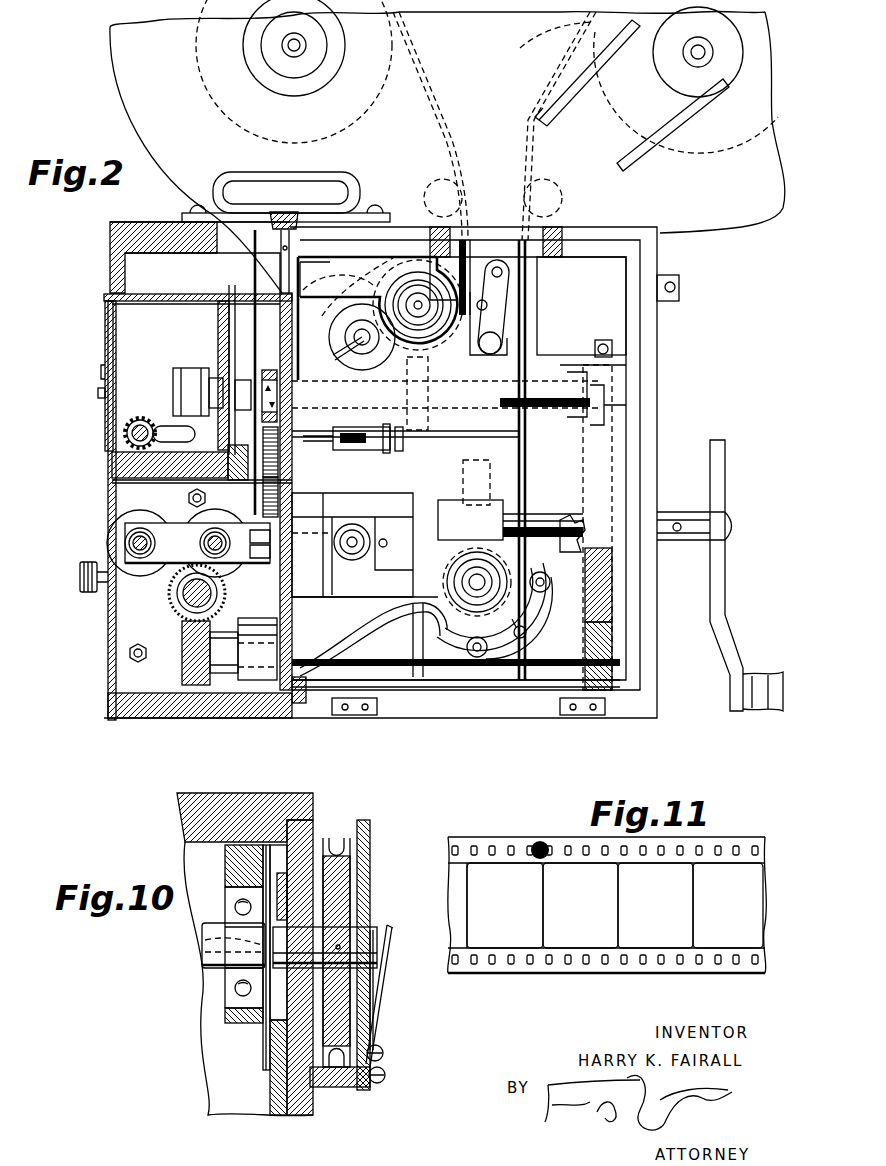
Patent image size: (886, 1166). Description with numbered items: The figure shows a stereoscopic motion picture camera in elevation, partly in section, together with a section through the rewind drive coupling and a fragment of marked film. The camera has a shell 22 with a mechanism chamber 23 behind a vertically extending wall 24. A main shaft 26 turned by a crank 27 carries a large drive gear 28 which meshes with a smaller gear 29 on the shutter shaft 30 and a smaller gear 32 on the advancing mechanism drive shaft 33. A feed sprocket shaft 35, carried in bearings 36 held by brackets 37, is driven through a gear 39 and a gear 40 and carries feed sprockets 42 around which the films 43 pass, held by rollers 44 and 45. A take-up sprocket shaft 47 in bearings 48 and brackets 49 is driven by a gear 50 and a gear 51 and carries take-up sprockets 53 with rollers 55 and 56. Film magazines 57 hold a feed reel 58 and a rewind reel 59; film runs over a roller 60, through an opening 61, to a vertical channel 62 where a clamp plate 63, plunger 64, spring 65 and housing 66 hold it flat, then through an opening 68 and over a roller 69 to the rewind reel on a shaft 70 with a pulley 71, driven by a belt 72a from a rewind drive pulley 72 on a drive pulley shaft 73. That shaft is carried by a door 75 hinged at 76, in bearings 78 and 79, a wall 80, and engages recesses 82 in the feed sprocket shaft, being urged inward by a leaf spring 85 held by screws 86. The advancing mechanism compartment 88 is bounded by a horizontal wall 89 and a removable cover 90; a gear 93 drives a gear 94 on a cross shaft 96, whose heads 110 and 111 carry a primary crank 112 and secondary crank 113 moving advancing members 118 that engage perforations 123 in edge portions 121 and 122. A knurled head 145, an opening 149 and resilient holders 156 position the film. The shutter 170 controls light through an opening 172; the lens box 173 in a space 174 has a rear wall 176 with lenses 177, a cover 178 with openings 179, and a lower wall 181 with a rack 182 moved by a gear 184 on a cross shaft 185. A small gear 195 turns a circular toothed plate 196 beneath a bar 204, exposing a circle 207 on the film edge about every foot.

In FIG. 2, the shell 22 is at (660, 268).
In FIG. 10, the shell 22 is at (177, 812).
In FIG. 2, the mechanism chamber 23 is at (580, 480).
In FIG. 2, the vertically extending wall 24 is at (288, 690).
In FIG. 2, the main shaft 26 is at (522, 520).
In FIG. 2, the crank 27 is at (720, 605).
In FIG. 2, the drive gear 28 is at (610, 598).
In FIG. 2, the gear 29 is at (590, 418).
In FIG. 2, the shutter shaft 30 is at (548, 395).
In FIG. 2, the gear 32 is at (610, 650).
In FIG. 2, the advancing mechanism drive shaft 33 is at (528, 668).
In FIG. 2, the feed sprocket shaft 35 is at (407, 303).
In FIG. 10, the feed sprocket shaft 35 is at (210, 955).
In FIG. 2, the bearings 36 is at (418, 292).
In FIG. 10, the bearings 36 is at (232, 986).
In FIG. 2, the brackets 37 is at (345, 275).
In FIG. 10, the brackets 37 is at (232, 862).
In FIG. 2, the gear 39 is at (420, 375).
In FIG. 2, the gear 40 is at (344, 294).
In FIG. 2, the feed sprockets 42 is at (373, 356).
In FIG. 2, the films 43 is at (471, 262).
In FIG. 11, the films 43 is at (585, 938).
In FIG. 2, the roller 44 is at (350, 350).
In FIG. 2, the roller 45 is at (510, 312).
In FIG. 2, the take-up sprocket shaft 47 is at (470, 582).
In FIG. 2, the bearings 48 is at (455, 596).
In FIG. 2, the bracket 49 is at (425, 579).
In FIG. 2, the gear 50 is at (475, 490).
In FIG. 2, the gear 51 is at (450, 566).
In FIG. 2, the take-up sprockets 53 is at (470, 641).
In FIG. 2, the roller 55 is at (560, 552).
In FIG. 2, the roller 56 is at (475, 668).
In FIG. 2, the film magazines 57 is at (118, 72).
In FIG. 2, the feed reel 58 is at (213, 93).
In FIG. 2, the rewind reel 59 is at (556, 39).
In FIG. 2, the roller 60 is at (441, 184).
In FIG. 2, the opening 61 is at (440, 252).
In FIG. 2, the vertical channel 62 is at (297, 700).
In FIG. 2, the clamp plate 63 is at (300, 440).
In FIG. 2, the plunger 64 is at (320, 438).
In FIG. 2, the spring 65 is at (360, 440).
In FIG. 2, the housing 66 is at (368, 430).
In FIG. 2, the opening 68 is at (530, 248).
In FIG. 2, the roller 69 is at (550, 184).
In FIG. 2, the shaft 70 is at (700, 52).
In FIG. 2, the pulley 71 is at (716, 90).
In FIG. 10, the rewind drive pulley 72 is at (340, 838).
In FIG. 2, the belt 72a is at (636, 170).
In FIG. 10, the drive pulley shaft 73 is at (356, 935).
In FIG. 10, the door 75 is at (315, 1112).
In FIG. 2, the hinge 76 is at (355, 716).
In FIG. 10, the bearing 78 is at (297, 923).
In FIG. 10, the bearing 79 is at (342, 928).
In FIG. 10, the wall 80 is at (374, 1005).
In FIG. 2, the recesses 82 is at (403, 302).
In FIG. 10, the recesses 82 is at (200, 937).
In FIG. 10, the leaf spring 85 is at (382, 1000).
In FIG. 10, the screws 86 is at (383, 1054).
In FIG. 2, the advancing mechanism compartment 88 is at (105, 695).
In FIG. 2, the horizontal wall 89 is at (160, 488).
In FIG. 2, the removable cover 90 is at (120, 672).
In FIG. 2, the gear 93 is at (190, 660).
In FIG. 2, the gear 94 is at (180, 608).
In FIG. 2, the cross shaft 96 is at (182, 594).
In FIG. 2, the concentric head 110 is at (265, 565).
In FIG. 2, the concentric head 111 is at (105, 596).
In FIG. 2, the primary crank 112 is at (205, 548).
In FIG. 2, the secondary crank 113 is at (125, 546).
In FIG. 2, the advancing members 118 is at (115, 521).
In FIG. 11, the edge portion 121 is at (690, 848).
In FIG. 11, the edge portion 122 is at (713, 968).
In FIG. 11, the perforations 123 is at (722, 848).
In FIG. 2, the knurled head 145 is at (348, 546).
In FIG. 2, the opening 149 is at (384, 539).
In FIG. 2, the resilient holder 156 is at (302, 592).
In FIG. 2, the shutter 170 is at (282, 240).
In FIG. 2, the opening 172 is at (338, 337).
In FIG. 2, the lens box 173 is at (125, 304).
In FIG. 2, the space 174 is at (232, 292).
In FIG. 2, the rear wall 176 is at (220, 314).
In FIG. 2, the lenses 177 is at (175, 390).
In FIG. 2, the cover 178 is at (103, 333).
In FIG. 2, the openings 179 is at (103, 372).
In FIG. 2, the lower wall 181 is at (105, 470).
In FIG. 2, the rack 182 is at (105, 448).
In FIG. 2, the gear 184 is at (112, 398).
In FIG. 2, the cross shaft 185 is at (143, 428).
In FIG. 2, the small gear 195 is at (296, 530).
In FIG. 2, the circular toothed plate 196 is at (262, 512).
In FIG. 2, the bar 204 is at (265, 495).
In FIG. 11, the exposed circle 207 is at (541, 843).